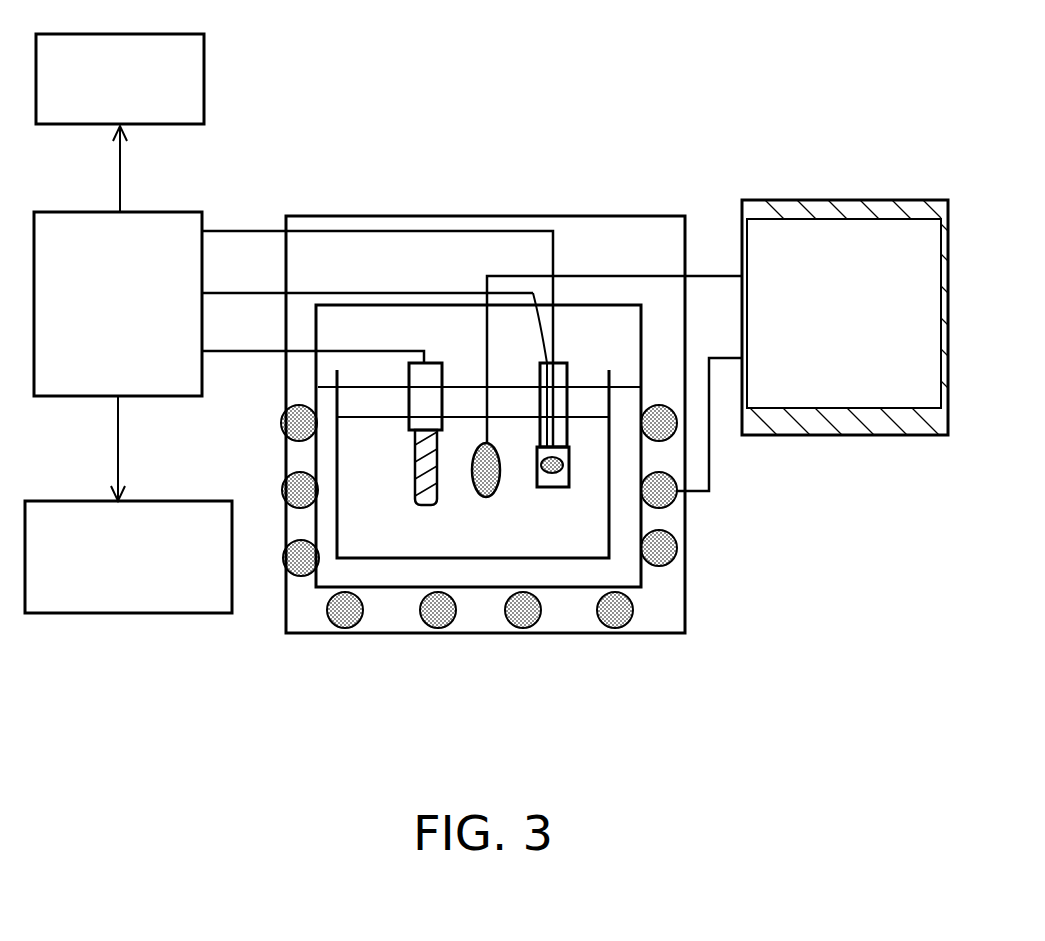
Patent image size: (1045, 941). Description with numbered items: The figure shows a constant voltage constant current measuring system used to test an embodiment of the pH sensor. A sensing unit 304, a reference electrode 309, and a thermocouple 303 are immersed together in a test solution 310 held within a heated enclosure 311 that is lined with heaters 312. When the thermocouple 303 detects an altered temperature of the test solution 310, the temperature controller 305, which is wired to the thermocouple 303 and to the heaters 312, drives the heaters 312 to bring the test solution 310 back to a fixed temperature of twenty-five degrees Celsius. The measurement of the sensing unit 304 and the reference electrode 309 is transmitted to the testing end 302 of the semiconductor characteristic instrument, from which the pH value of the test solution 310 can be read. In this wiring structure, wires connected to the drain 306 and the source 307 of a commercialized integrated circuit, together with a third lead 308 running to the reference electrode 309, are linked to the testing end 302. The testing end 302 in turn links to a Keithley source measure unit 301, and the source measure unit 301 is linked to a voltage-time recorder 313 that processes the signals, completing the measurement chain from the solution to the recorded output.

The source measure unit 301 is at (100, 570).
The testing end 302 is at (102, 319).
The thermocouple 303 is at (484, 443).
The sensing unit 304 is at (567, 447).
The temperature controller 305 is at (824, 348).
The drain 306 is at (213, 228).
The source 307 is at (225, 292).
The control line 308 is at (240, 352).
The reference electrode 309 is at (433, 363).
The test solution 310 is at (456, 543).
The furnace 311 is at (685, 625).
The heaters 312 is at (668, 557).
The voltage-time recorder 313 is at (100, 94).